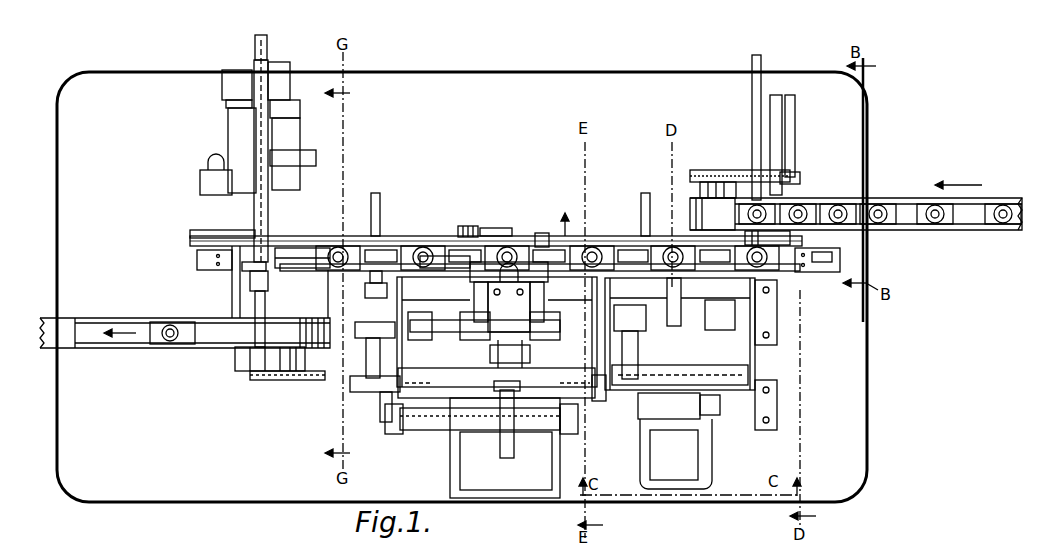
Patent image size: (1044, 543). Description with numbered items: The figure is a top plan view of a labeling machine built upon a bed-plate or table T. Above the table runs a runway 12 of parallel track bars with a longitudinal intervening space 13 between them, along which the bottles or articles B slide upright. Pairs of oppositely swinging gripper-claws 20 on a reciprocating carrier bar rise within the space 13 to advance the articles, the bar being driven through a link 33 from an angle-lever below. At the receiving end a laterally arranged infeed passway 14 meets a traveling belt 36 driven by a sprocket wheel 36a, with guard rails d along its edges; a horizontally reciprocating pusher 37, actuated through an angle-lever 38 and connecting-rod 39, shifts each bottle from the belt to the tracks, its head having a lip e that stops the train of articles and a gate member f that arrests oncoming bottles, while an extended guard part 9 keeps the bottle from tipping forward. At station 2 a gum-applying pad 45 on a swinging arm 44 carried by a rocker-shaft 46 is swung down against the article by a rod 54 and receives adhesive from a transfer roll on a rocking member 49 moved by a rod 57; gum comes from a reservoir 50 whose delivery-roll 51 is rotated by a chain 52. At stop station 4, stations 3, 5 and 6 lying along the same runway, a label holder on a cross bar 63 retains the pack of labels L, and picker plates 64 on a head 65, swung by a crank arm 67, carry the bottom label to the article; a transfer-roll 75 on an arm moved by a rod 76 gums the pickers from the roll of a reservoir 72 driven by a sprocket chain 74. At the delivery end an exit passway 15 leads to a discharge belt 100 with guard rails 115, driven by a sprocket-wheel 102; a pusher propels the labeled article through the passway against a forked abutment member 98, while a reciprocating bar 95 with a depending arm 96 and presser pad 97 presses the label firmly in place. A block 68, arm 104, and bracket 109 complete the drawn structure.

The station 2 is at (673, 250).
The roller carriage 3 is at (592, 250).
The stop station 4 is at (507, 250).
The roller carriage 5 is at (423, 250).
The roller carriage 6 is at (313, 258).
The horizontally extended upper part of offset 9 is at (542, 240).
The runway 12 is at (197, 258).
The longitudinal intervening space 13 is at (290, 258).
The infeed passway 14 is at (772, 228).
The exit passway 15 is at (250, 283).
The gripper-claws 20 is at (378, 250).
The link 33 is at (485, 223).
The traveling belt 36 is at (902, 217).
The sprocket wheel 36a is at (712, 172).
The pusher 37 is at (762, 150).
The angle-lever 38 is at (794, 150).
The connecting-rod 39 is at (792, 172).
The swinging arm 44 is at (670, 322).
The gum-applying pad 45 is at (684, 302).
The rocker-shaft 46 is at (680, 334).
The rocking member 49 is at (718, 378).
The gum-supply reservoir 50 is at (676, 454).
The delivery-roll 51 is at (679, 405).
The chain 52 is at (760, 431).
The rod 54 is at (720, 320).
The rod 57 is at (603, 396).
The cross bar 63 is at (497, 332).
The picker plates 64 is at (480, 311).
The head 65 is at (509, 272).
The crank arm 67 is at (355, 382).
The block 68 is at (375, 295).
The reservoir 72 is at (505, 448).
The sprocket chain 74 is at (481, 419).
The transfer-roll 75 is at (472, 335).
The rod 76 is at (366, 350).
The reciprocating bar 95 is at (258, 207).
The depending arm 96 is at (244, 270).
The presser pad 97 is at (250, 283).
The forked abutment member 98 is at (250, 365).
The discharge belt 100 is at (44, 333).
The sprocket-wheel 102 is at (280, 381).
The arm 104 is at (292, 113).
The bracket 109 is at (228, 142).
The guard rails 115 is at (114, 320).
The bottles or articles B is at (165, 346).
The labels L is at (518, 354).
The table T is at (462, 287).
The flange or lip e is at (712, 214).
The gate member f is at (826, 204).
The guard rails d is at (987, 217).